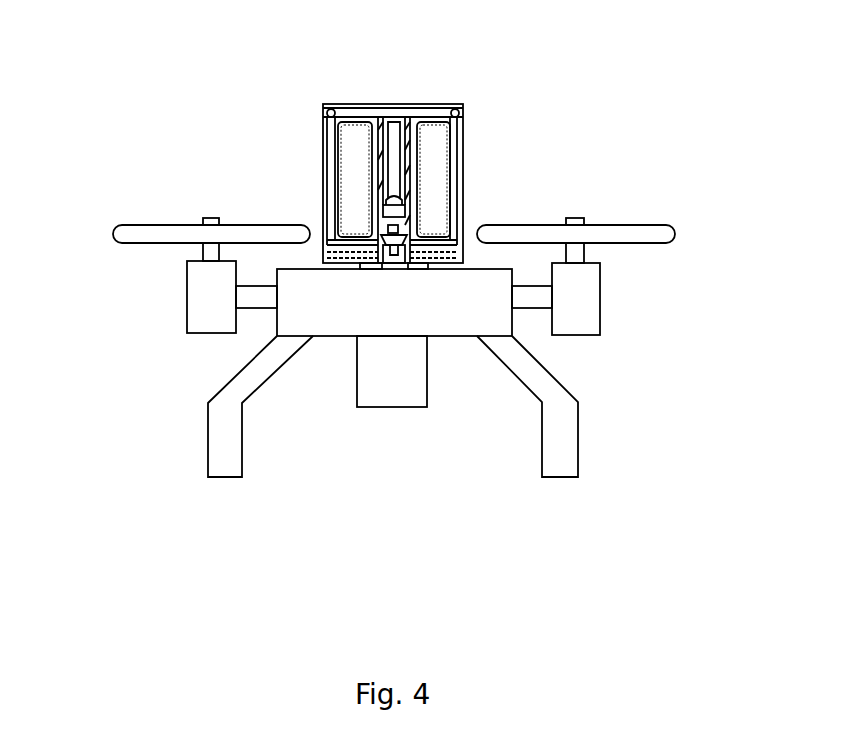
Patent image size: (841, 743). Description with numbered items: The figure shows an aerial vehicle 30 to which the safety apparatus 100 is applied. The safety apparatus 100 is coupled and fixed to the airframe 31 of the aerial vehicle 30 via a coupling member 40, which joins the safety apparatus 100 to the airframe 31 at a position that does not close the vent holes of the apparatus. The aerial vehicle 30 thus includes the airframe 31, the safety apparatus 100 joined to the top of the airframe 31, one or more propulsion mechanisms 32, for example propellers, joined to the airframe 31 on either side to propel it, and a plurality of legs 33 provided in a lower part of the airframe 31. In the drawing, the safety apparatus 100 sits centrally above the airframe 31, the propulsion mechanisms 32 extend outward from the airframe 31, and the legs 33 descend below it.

The safety apparatus 100 is at (457, 98).
The aerial vehicle 30 is at (390, 427).
The airframe 31 is at (344, 320).
The propulsion mechanism 32 is at (142, 235).
The leg 33 is at (232, 463).
The coupling member 40 is at (417, 266).